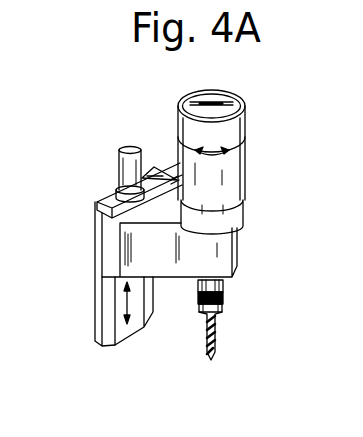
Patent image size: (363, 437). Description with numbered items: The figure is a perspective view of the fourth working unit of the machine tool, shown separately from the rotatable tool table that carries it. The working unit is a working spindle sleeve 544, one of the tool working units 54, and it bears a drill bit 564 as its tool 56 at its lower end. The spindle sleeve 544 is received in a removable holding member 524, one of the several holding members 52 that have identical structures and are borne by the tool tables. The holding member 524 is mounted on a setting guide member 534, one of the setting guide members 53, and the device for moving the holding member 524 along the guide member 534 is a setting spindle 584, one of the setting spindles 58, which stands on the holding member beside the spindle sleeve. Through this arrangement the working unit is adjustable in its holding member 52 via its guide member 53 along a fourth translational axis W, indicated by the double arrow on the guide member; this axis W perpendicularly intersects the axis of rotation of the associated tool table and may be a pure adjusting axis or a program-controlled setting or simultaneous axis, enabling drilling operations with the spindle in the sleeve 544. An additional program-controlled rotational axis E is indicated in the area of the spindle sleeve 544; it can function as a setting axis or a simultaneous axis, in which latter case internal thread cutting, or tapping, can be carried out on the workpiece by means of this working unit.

The holding member 52 is at (197, 260).
The holding member 524 is at (212, 258).
The guide member 53 is at (91, 289).
The setting guide member 534 is at (100, 328).
The working unit 54 is at (244, 162).
The working spindle sleeve 544 is at (233, 183).
The tool 56 is at (242, 329).
The drill bit 564 is at (217, 348).
The setting spindle 58 is at (135, 147).
The setting spindle 584 is at (130, 147).
The rotational axis E is at (215, 153).
The translational axis W is at (125, 296).